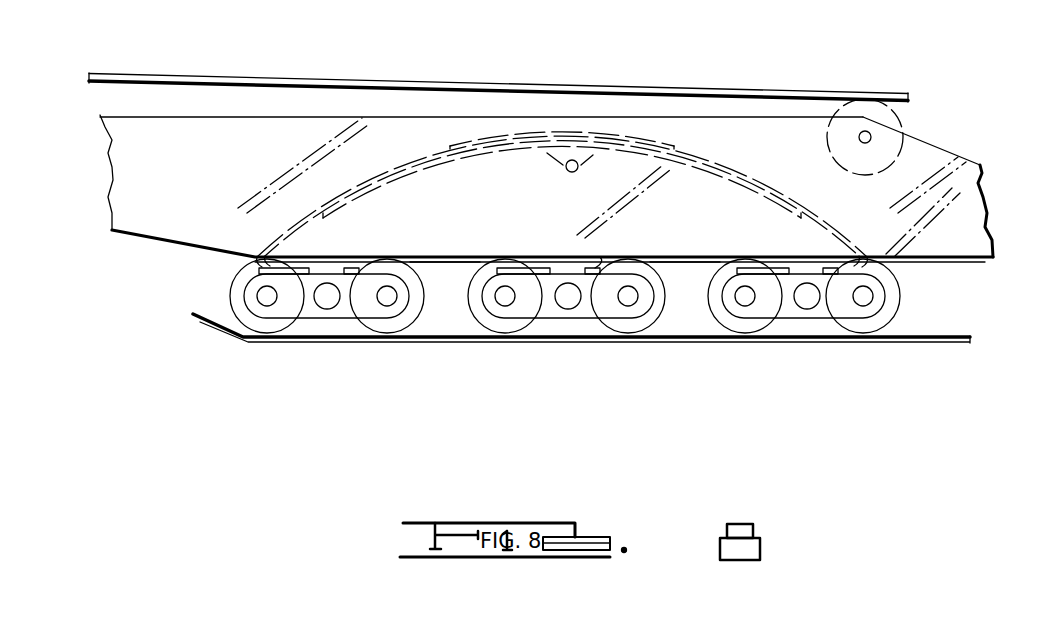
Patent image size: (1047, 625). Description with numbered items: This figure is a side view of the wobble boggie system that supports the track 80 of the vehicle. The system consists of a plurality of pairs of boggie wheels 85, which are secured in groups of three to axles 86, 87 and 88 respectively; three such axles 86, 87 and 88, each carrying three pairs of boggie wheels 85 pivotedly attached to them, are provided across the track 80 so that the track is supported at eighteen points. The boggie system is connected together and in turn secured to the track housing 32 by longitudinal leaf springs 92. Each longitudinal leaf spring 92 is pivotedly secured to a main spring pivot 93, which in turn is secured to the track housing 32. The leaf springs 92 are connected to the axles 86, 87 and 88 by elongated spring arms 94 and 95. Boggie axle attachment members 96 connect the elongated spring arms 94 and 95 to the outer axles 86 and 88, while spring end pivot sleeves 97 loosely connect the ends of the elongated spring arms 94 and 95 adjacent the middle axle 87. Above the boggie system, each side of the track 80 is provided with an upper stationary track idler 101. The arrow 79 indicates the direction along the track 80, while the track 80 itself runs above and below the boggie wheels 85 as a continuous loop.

The track housing 32 is at (141, 180).
The direction of travel arrow 79 is at (186, 270).
The track 80 is at (457, 88).
The boggie wheels 85 is at (257, 330).
The axle 86 is at (327, 302).
The axle 87 is at (568, 302).
The axle 88 is at (808, 302).
The longitudinal leaf spring 92 is at (760, 176).
The main spring pivot 93 is at (567, 171).
The elongated spring arm 94 is at (448, 258).
The elongated spring arm 95 is at (685, 258).
The boggie axle attachment member 96 is at (333, 264).
The spring end pivot sleeve 97 is at (600, 257).
The upper stationary track idler 101 is at (900, 120).